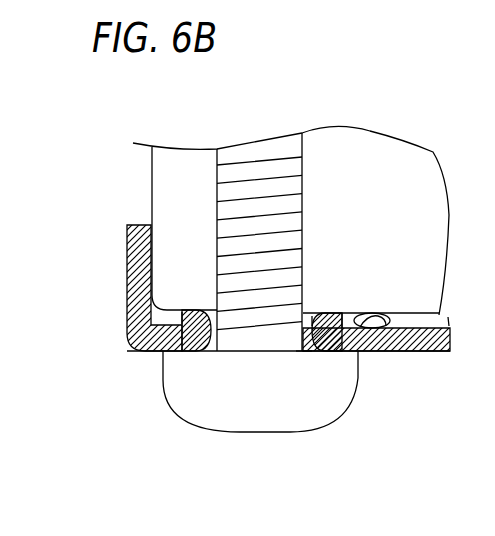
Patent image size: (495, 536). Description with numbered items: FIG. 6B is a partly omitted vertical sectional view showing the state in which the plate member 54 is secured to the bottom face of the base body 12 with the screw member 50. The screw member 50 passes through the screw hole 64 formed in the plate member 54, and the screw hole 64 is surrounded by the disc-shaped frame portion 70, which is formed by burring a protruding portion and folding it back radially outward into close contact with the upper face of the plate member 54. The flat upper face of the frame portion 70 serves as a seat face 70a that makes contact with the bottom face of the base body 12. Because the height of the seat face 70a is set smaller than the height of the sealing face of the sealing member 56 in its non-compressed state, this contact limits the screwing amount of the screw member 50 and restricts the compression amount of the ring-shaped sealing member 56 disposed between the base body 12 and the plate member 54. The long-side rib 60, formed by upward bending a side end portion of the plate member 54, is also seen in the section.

The base body 12 is at (380, 173).
The long-side rib 60 is at (127, 252).
The frame portion 70 is at (175, 352).
The seat face 70a is at (190, 311).
The sealing member 56 is at (383, 312).
The plate member 54 is at (413, 352).
The screw member 50 is at (237, 405).
The screw hole 64 is at (303, 352).